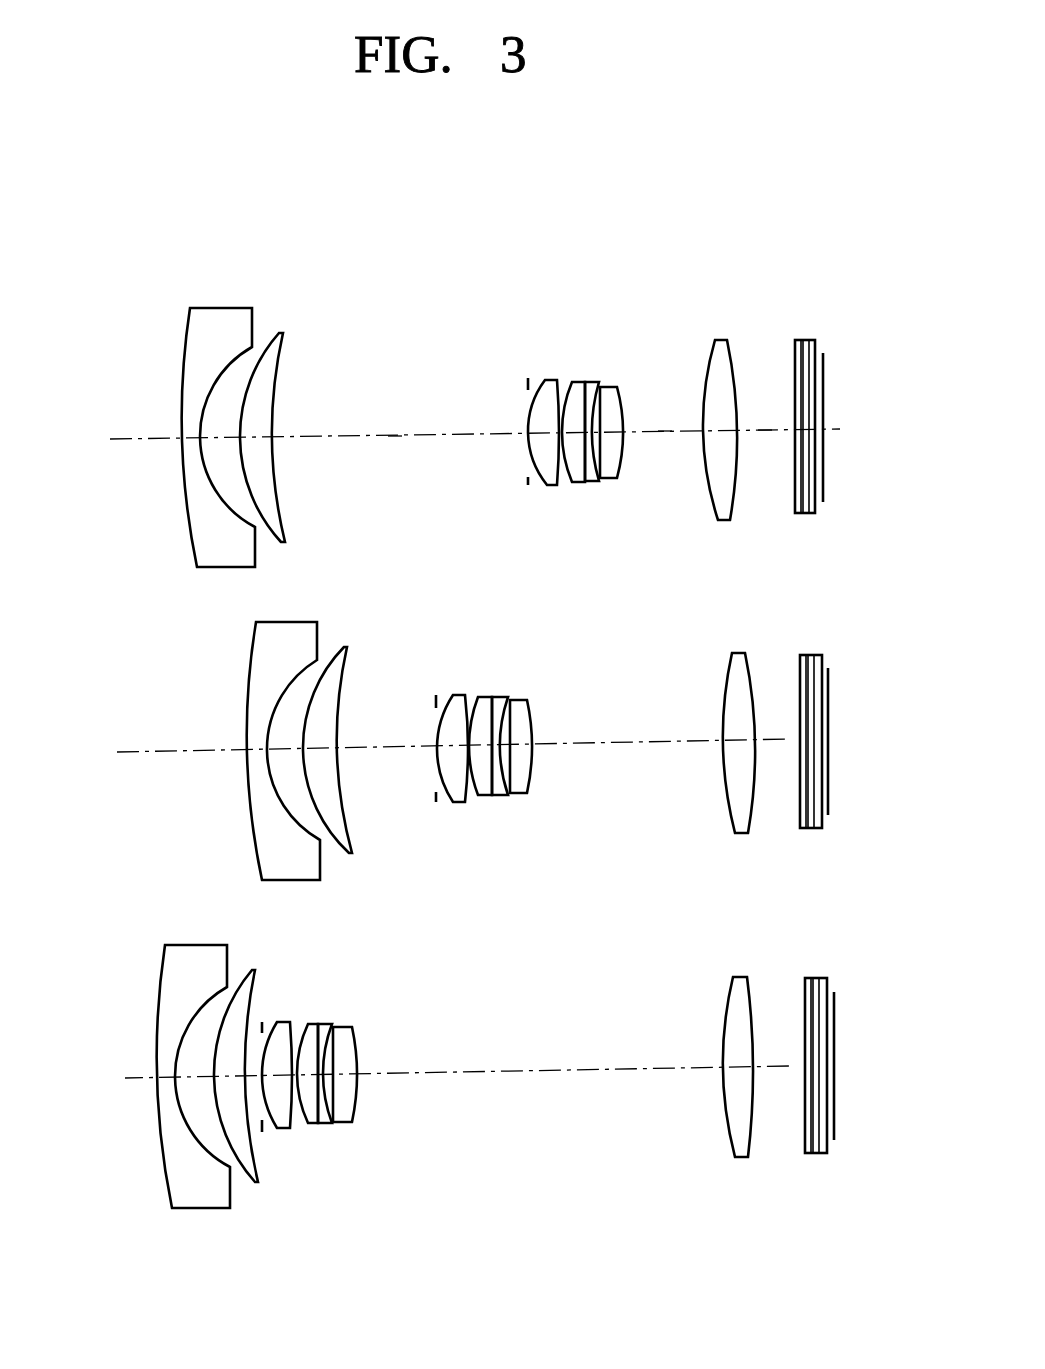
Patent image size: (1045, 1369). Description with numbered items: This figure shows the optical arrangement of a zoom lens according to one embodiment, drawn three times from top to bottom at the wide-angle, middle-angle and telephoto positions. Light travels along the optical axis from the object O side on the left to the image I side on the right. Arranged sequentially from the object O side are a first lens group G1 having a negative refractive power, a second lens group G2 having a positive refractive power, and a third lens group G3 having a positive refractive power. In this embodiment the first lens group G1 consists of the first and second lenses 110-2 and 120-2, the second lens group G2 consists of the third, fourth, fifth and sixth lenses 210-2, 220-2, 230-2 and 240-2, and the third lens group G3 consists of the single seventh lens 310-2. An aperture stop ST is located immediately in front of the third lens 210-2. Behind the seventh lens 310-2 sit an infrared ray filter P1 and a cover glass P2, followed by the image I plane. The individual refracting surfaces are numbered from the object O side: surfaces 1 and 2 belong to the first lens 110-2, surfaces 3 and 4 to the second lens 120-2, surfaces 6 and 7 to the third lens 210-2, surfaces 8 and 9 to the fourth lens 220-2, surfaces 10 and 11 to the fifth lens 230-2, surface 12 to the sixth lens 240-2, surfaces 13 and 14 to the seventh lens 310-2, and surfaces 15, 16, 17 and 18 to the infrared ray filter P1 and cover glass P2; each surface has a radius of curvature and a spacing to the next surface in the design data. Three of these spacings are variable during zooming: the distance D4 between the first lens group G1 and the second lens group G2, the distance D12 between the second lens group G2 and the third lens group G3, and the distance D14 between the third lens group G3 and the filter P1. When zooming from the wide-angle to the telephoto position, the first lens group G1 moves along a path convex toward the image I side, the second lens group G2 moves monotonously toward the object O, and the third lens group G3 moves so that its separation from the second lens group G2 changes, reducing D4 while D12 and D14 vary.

The first lens group G1 is at (320, 229).
The second lens group G2 is at (619, 223).
The third lens group G3 is at (745, 221).
The first lens 110-2 is at (210, 315).
The second lens 120-2 is at (280, 333).
The third lens 210-2 is at (543, 380).
The fourth lens 220-2 is at (573, 382).
The fifth lens 230-2 is at (597, 382).
The sixth lens 240-2 is at (615, 393).
The seventh lens 310-2 is at (720, 338).
The aperture stop ST is at (525, 379).
The infrared ray filter P1 is at (797, 340).
The cover glass P2 is at (812, 337).
The object O is at (457, 439).
The image I is at (836, 427).
The variable distance D4 is at (395, 437).
The variable distance D12 is at (665, 431).
The variable distance D14 is at (765, 430).
The first surface 1 is at (250, 677).
The second surface 2 is at (270, 720).
The third surface 3 is at (327, 662).
The fourth surface 4 is at (340, 702).
The sixth surface 6 is at (448, 702).
The seventh surface 7 is at (467, 700).
The eighth surface 8 is at (473, 796).
The ninth surface 9 is at (497, 788).
The tenth surface 10 is at (510, 712).
The eleventh surface 11 is at (512, 735).
The twelfth surface 12 is at (532, 770).
The thirteenth surface 13 is at (730, 670).
The fourteenth surface 14 is at (752, 663).
The fifteenth surface 15 is at (802, 670).
The sixteenth surface 16 is at (810, 672).
The seventeenth surface 17 is at (807, 807).
The eighteenth surface 18 is at (830, 820).